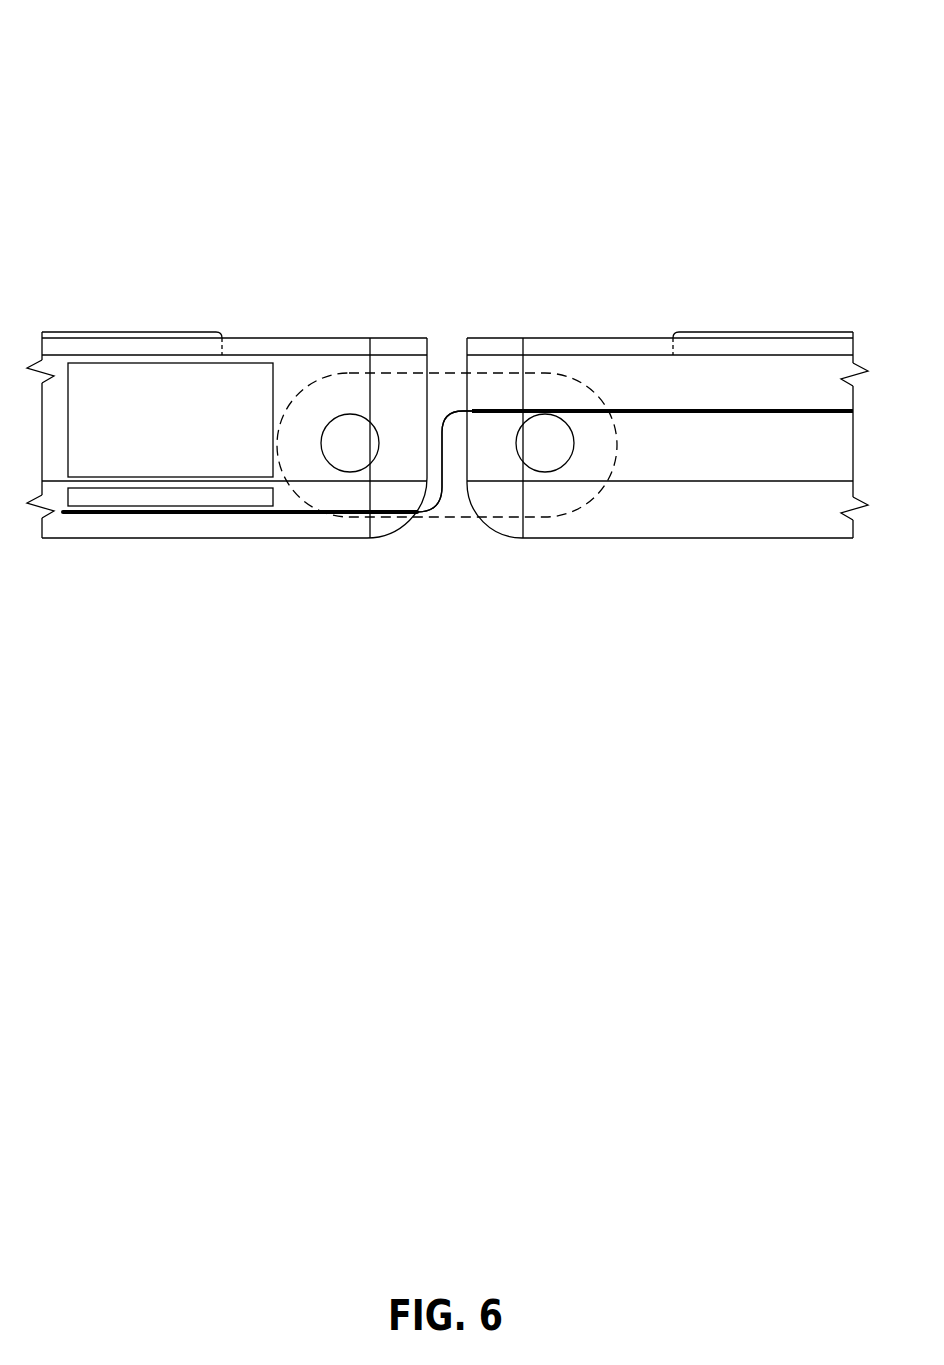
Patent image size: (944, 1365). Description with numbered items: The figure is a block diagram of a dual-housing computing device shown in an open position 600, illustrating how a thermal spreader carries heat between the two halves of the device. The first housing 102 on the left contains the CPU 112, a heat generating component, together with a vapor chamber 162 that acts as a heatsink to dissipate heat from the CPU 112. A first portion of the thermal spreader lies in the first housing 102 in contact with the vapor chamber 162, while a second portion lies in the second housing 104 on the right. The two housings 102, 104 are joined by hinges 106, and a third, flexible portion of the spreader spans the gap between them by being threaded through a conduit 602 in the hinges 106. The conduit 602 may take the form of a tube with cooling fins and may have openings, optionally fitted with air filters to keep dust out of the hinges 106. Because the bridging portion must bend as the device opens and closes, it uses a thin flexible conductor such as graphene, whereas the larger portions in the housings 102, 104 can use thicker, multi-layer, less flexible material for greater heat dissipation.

The open position 600 is at (97, 40).
The first housing 102 is at (103, 538).
The second housing 104 is at (830, 538).
The hinges 106 is at (572, 513).
The CPU 112 is at (170, 420).
The vapor chamber 162 is at (78, 506).
The conduit 602 is at (455, 493).